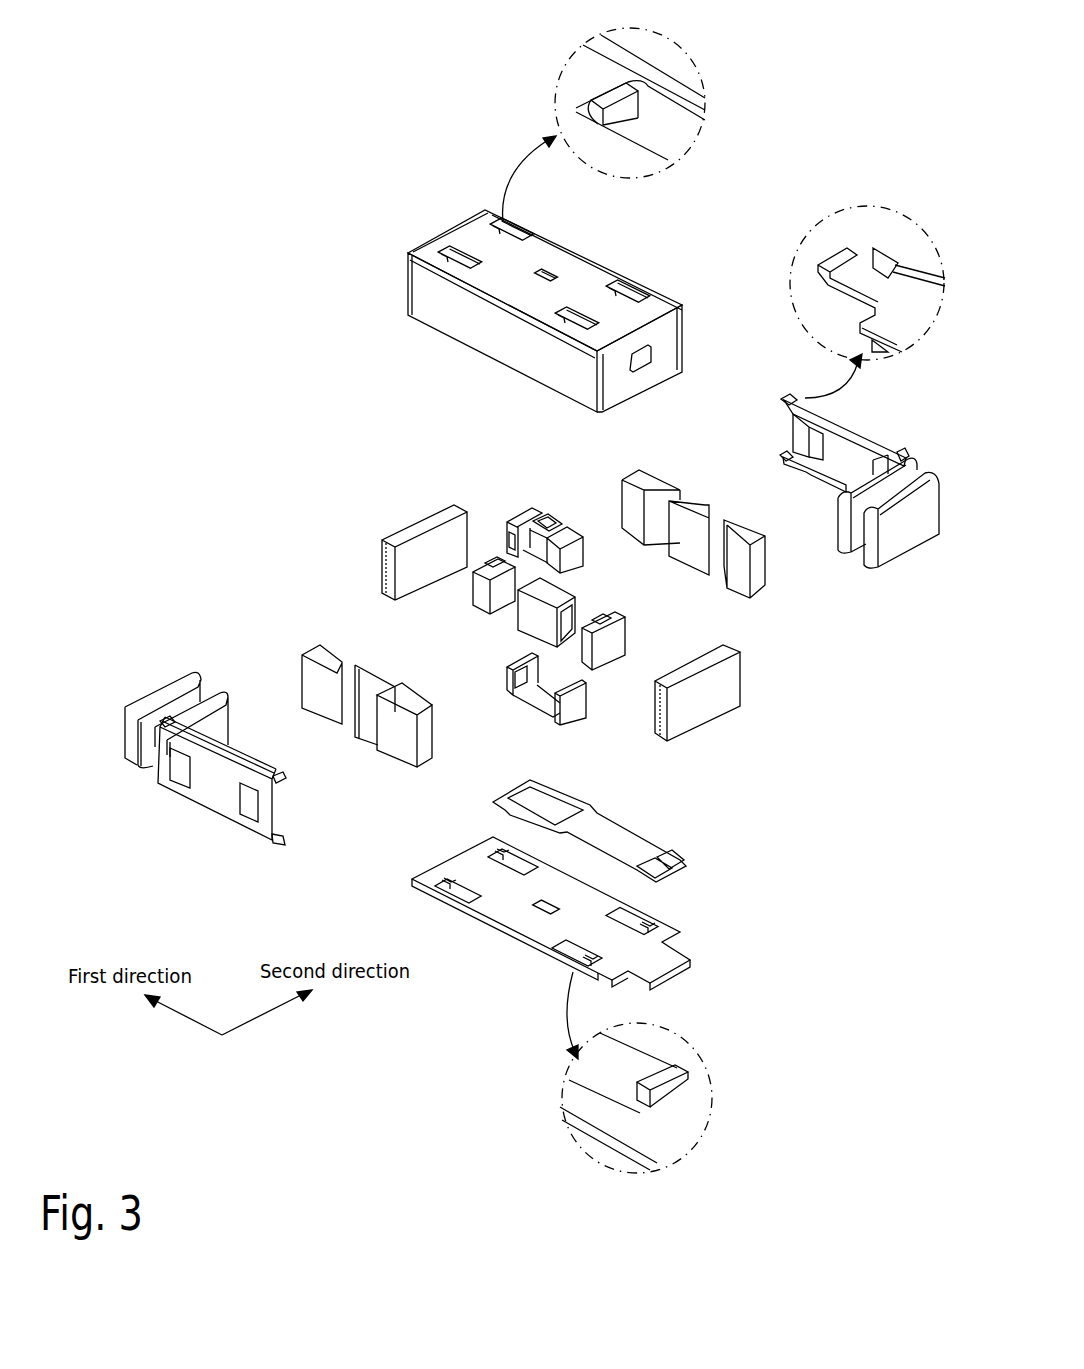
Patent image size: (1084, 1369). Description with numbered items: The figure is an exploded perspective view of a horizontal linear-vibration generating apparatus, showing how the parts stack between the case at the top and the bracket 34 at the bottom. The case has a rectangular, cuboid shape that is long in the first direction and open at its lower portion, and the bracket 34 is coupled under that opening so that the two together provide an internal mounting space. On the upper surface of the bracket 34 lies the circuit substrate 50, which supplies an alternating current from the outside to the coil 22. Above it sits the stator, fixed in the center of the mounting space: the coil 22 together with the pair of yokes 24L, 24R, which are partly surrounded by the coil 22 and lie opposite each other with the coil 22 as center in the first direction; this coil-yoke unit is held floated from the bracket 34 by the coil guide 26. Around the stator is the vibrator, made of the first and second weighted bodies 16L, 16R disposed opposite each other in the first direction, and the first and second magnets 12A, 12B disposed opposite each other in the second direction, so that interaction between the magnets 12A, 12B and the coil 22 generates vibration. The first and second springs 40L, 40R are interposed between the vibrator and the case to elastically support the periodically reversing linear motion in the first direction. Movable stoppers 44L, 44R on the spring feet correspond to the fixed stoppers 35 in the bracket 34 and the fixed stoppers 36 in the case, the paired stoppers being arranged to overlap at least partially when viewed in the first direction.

The first magnet 12A is at (707, 494).
The second magnet 12B is at (362, 747).
The first weighted body 16L is at (428, 517).
The second weighted body 16R is at (740, 690).
The coil 22 is at (530, 622).
The yoke 24L is at (490, 600).
The yoke 24R is at (622, 643).
The coil guide 26 is at (531, 509).
The bracket 34 is at (523, 930).
The fixed stopper 35 is at (412, 882).
The fixed stopper 36 is at (445, 250).
The first spring 40L is at (899, 545).
The second spring 40R is at (200, 684).
The movable stopper 44L is at (838, 258).
The movable stopper 44R is at (170, 707).
The circuit substrate 50 is at (640, 847).